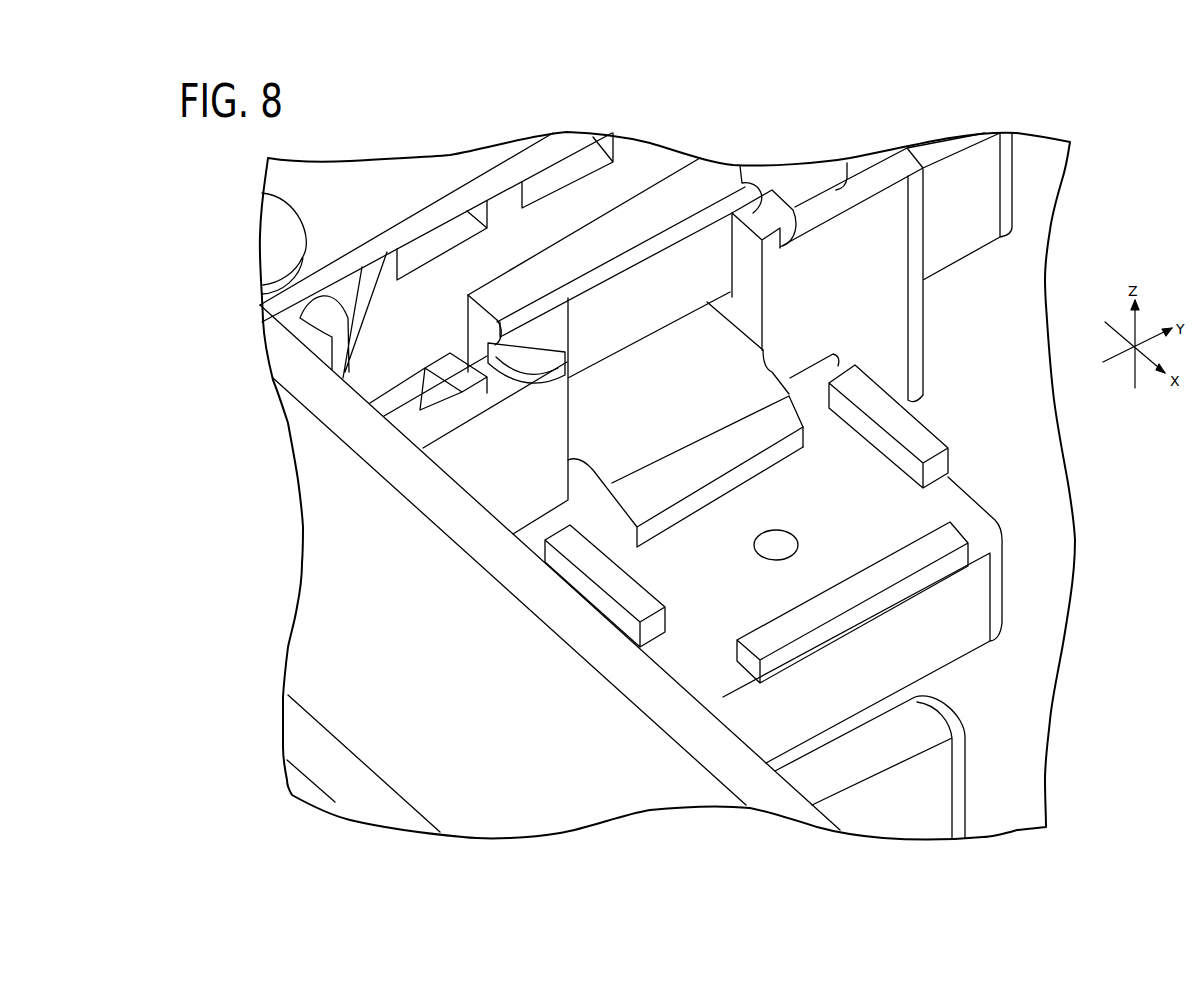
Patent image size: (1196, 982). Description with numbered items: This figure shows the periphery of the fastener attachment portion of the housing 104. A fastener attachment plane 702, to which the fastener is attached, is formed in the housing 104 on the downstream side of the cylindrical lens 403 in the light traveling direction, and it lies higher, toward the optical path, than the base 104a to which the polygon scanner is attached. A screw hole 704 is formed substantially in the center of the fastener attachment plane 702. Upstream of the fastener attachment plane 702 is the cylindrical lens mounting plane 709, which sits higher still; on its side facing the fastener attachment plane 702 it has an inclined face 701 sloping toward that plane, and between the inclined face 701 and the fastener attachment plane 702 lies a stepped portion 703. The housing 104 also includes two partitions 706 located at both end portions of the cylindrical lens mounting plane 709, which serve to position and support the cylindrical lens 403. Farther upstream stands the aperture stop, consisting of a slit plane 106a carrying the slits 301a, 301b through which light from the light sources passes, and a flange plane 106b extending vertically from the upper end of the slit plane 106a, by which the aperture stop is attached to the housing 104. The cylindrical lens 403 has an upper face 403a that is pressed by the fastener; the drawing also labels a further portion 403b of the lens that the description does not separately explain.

The housing 104 is at (570, 617).
The base 104a is at (1043, 535).
The slit plane 106a is at (655, 165).
The flange plane 106b is at (360, 180).
The slit 301a is at (563, 172).
The slit 301b is at (437, 243).
The cylindrical lens 403 is at (528, 252).
The upper face 403a is at (723, 175).
The rail end portion 403b is at (470, 326).
The inclined face 701 is at (760, 437).
The fastener attachment plane 702 is at (918, 511).
The stepped portion 703 is at (680, 510).
The screw hole 704 is at (790, 545).
The partition 706 is at (893, 312).
The cylindrical lens mounting plane 709 is at (656, 378).